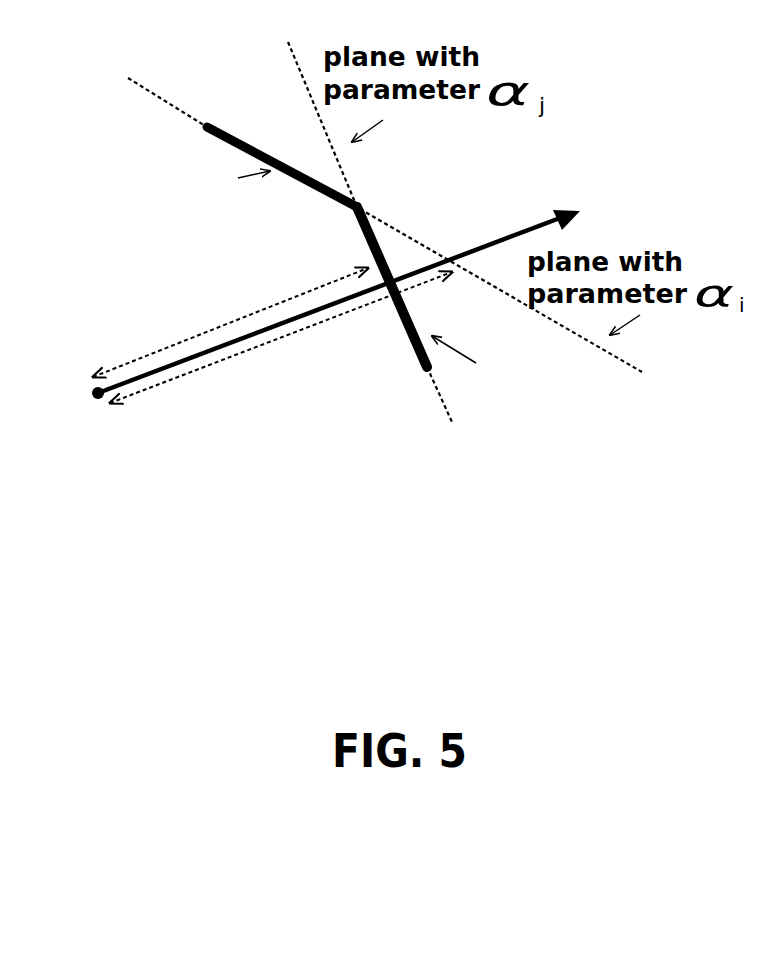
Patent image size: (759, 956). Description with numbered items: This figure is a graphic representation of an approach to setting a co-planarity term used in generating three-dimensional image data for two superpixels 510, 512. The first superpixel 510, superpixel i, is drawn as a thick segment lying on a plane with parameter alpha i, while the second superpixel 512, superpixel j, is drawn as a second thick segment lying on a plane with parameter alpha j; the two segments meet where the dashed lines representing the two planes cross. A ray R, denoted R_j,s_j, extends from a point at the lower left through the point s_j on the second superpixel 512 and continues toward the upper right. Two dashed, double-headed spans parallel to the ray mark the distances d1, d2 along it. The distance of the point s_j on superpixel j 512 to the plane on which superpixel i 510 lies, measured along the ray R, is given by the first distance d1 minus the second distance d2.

The superpixel i 510 is at (214, 128).
The superpixel j 512 is at (362, 243).
The ray R is at (389, 274).
The distance d1 is at (230, 310).
The distance d2 is at (281, 360).